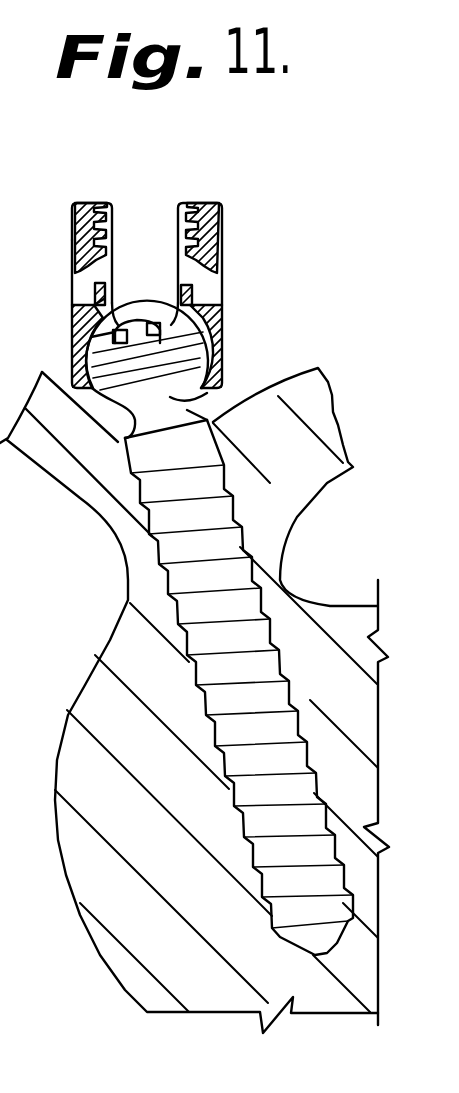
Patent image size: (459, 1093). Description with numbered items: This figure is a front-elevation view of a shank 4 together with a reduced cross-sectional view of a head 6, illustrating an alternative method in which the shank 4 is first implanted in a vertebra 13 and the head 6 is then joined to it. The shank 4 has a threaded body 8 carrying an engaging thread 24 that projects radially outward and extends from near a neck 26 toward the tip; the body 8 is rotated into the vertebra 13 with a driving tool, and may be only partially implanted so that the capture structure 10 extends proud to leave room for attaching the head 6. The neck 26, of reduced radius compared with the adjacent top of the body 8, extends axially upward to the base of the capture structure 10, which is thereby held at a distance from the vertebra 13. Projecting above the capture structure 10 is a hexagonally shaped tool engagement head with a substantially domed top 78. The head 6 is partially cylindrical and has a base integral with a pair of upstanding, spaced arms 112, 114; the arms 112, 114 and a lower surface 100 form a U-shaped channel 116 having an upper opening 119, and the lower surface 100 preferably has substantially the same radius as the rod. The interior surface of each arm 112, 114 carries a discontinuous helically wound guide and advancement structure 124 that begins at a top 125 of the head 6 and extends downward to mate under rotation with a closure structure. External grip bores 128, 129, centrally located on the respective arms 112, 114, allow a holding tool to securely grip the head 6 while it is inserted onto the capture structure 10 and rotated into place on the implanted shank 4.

The shank 4 is at (207, 421).
The head 6 is at (72, 218).
The body 8 is at (220, 513).
The capture structure 10 is at (93, 382).
The vertebra 13 is at (100, 678).
The engaging thread 24 is at (215, 757).
The neck 26 is at (208, 406).
The domed top 78 is at (150, 322).
The lower surface 100 is at (172, 320).
The arm 112 is at (72, 263).
The arm 114 is at (212, 252).
The U-shaped channel 116 is at (153, 245).
The upper opening 119 is at (150, 210).
The guide and advancement structure 124 is at (100, 237).
The top 125 is at (88, 203).
The grip bore 128 is at (82, 284).
The grip bore 129 is at (208, 288).